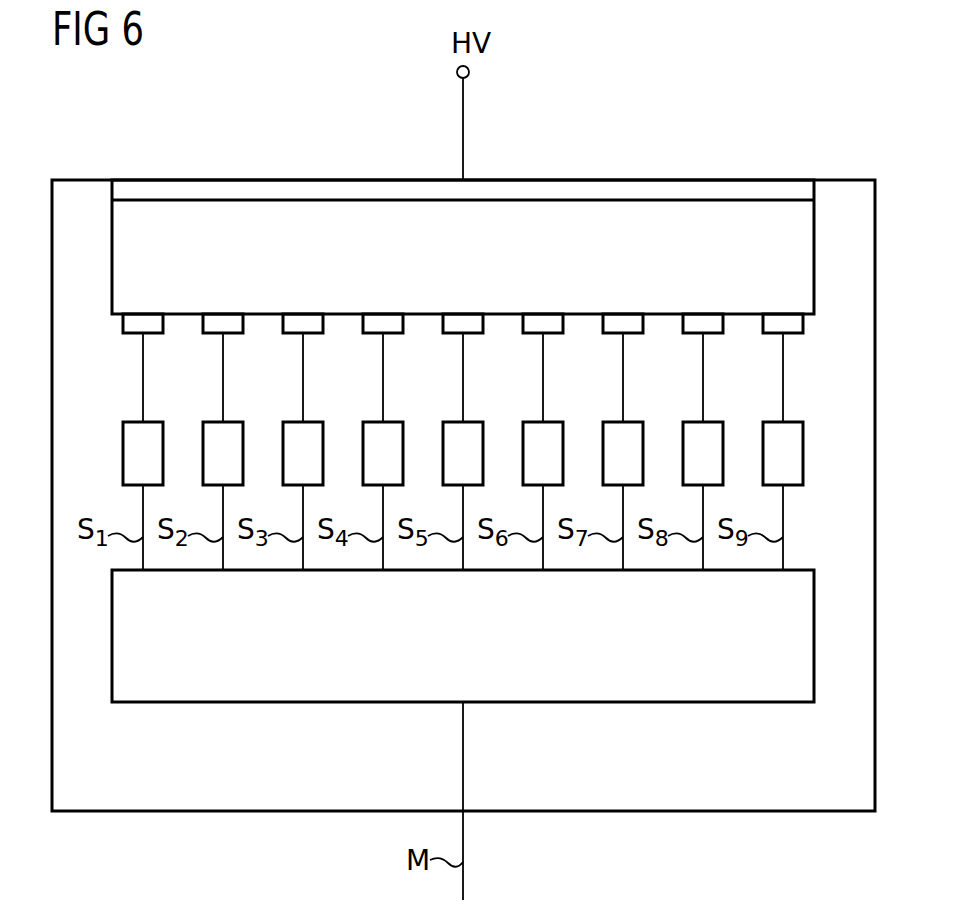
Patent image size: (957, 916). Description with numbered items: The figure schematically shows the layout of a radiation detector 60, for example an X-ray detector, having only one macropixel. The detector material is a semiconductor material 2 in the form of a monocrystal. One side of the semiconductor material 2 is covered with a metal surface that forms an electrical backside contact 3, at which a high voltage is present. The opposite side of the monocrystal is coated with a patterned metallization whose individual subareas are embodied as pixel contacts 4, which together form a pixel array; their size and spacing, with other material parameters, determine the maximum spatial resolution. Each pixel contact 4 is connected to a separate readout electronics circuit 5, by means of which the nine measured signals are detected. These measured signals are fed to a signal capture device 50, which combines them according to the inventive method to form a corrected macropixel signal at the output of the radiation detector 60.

The semiconductor material 2 is at (805, 255).
The backside contact 3 is at (664, 190).
The pixel contacts 4 is at (123, 326).
The readout electronics circuits 5 is at (123, 452).
The signal capture device 50 is at (358, 704).
The radiation detector 60 is at (785, 86).